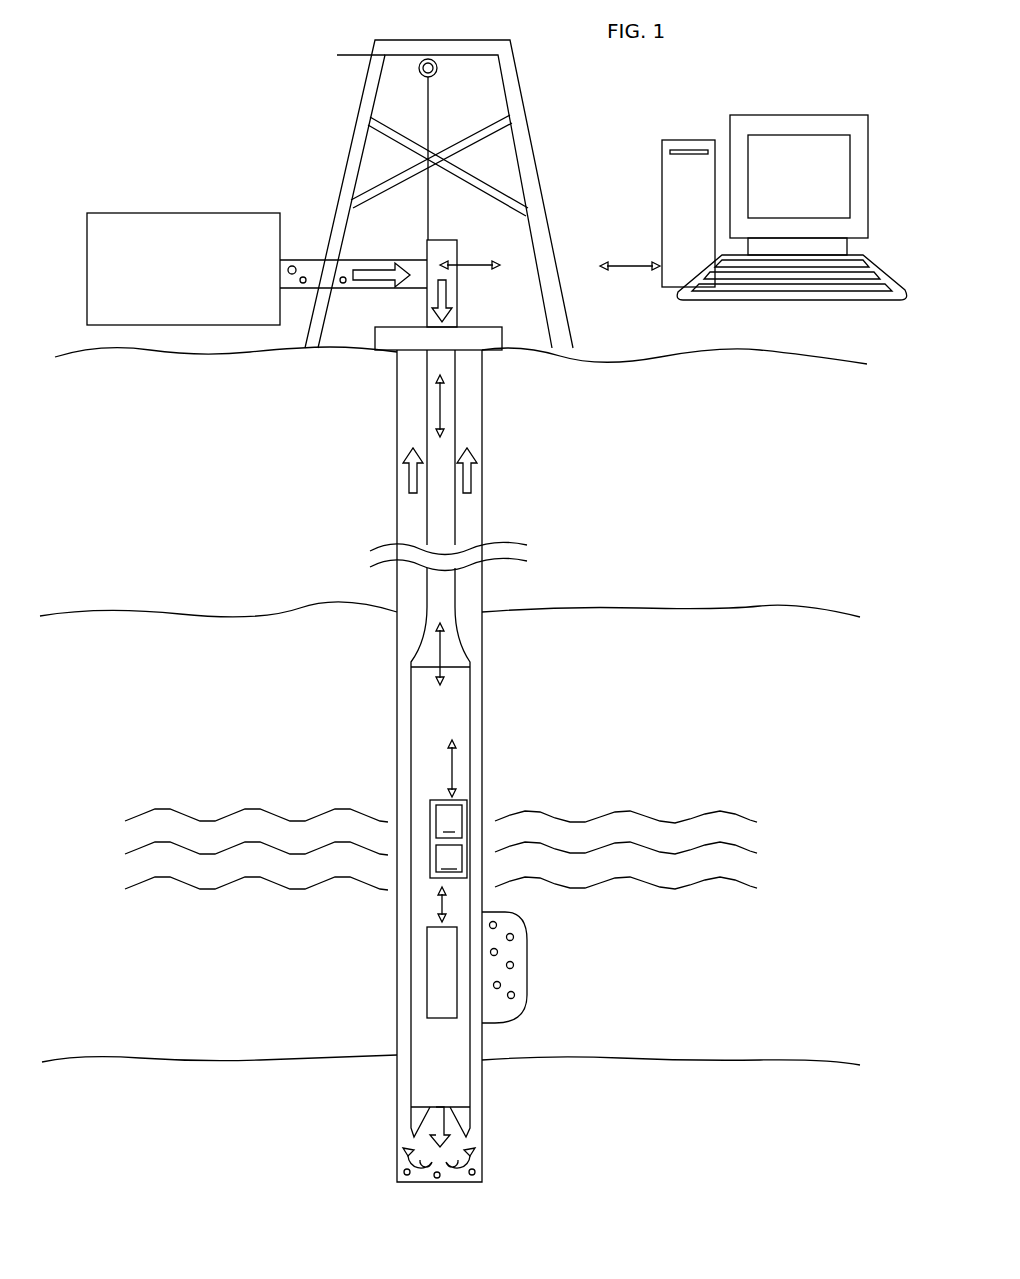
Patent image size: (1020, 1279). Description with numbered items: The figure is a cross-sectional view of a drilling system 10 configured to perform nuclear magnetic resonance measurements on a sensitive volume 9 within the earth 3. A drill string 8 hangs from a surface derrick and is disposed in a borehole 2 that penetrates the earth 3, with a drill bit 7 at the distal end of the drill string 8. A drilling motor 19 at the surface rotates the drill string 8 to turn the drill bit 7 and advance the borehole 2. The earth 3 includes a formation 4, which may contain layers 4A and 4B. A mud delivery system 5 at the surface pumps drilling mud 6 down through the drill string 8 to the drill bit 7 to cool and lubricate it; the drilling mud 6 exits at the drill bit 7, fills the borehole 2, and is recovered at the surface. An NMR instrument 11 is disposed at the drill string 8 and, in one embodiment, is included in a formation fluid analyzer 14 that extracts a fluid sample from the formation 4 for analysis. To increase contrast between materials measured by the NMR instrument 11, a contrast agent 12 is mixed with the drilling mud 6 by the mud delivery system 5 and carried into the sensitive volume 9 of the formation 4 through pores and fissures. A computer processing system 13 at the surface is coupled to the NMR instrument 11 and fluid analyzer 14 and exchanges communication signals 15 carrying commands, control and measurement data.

The drilling system 10 is at (165, 125).
The contrast agent 12 is at (292, 264).
The mud delivery system 5 is at (176, 307).
The drilling mud 6 is at (384, 266).
The computer processing system 13 is at (660, 160).
The communication signals 15 is at (624, 266).
The drilling motor 19 is at (388, 340).
The earth 3 is at (774, 458).
The borehole 2 is at (398, 455).
The drill string 8 is at (443, 518).
The formation 4 is at (752, 713).
The formation layer 4A is at (752, 839).
The formation layer 4B is at (752, 874).
The formation fluid analyzer 14 is at (462, 800).
The sensitive volume 9 is at (528, 1000).
The NMR instrument 11 is at (427, 988).
The drill bit 7 is at (413, 1118).